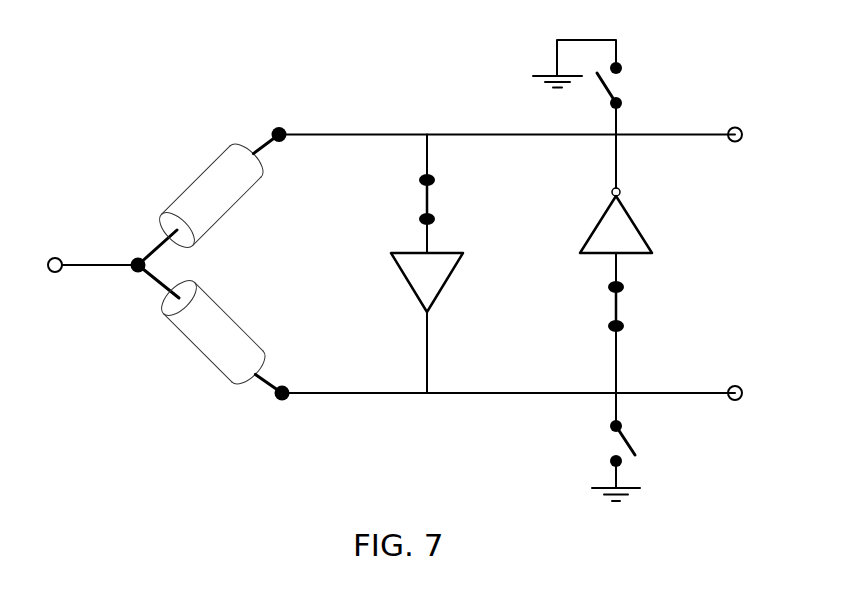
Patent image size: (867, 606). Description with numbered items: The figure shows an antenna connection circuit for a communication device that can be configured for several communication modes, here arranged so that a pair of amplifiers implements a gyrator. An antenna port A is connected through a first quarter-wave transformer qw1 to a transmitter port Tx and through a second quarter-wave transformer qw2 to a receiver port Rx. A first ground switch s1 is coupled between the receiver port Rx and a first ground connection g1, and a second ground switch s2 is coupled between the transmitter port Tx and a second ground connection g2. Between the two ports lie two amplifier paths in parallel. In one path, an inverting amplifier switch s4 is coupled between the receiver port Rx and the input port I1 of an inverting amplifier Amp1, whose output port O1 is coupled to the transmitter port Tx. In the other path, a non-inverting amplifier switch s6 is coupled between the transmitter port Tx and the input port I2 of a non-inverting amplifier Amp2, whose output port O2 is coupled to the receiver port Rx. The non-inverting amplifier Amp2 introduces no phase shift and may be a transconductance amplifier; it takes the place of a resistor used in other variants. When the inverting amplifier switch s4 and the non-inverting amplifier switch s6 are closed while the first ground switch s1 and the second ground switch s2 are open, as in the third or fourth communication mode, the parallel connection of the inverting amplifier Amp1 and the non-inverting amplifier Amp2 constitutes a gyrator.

The antenna port A is at (55, 257).
The first quarter-wave transformer qw1 is at (197, 180).
The second quarter-wave transformer qw2 is at (198, 348).
The non-inverting amplifier switch s6 is at (422, 222).
The input port of the non-inverting amplifier I2 is at (428, 247).
The non-inverting amplifier Amp2 is at (408, 285).
The output port of the non-inverting amplifier O2 is at (425, 320).
The second ground connection g2 is at (543, 76).
The second ground switch s2 is at (622, 102).
The transmitter port Tx is at (735, 127).
The output port of the inverting amplifier O1 is at (612, 190).
The inverting amplifier Amp1 is at (633, 215).
The input port of the inverting amplifier I1 is at (620, 253).
The inverting amplifier switch s4 is at (612, 333).
The receiver port Rx is at (735, 385).
The first ground switch s1 is at (620, 424).
The first ground connection g1 is at (640, 487).